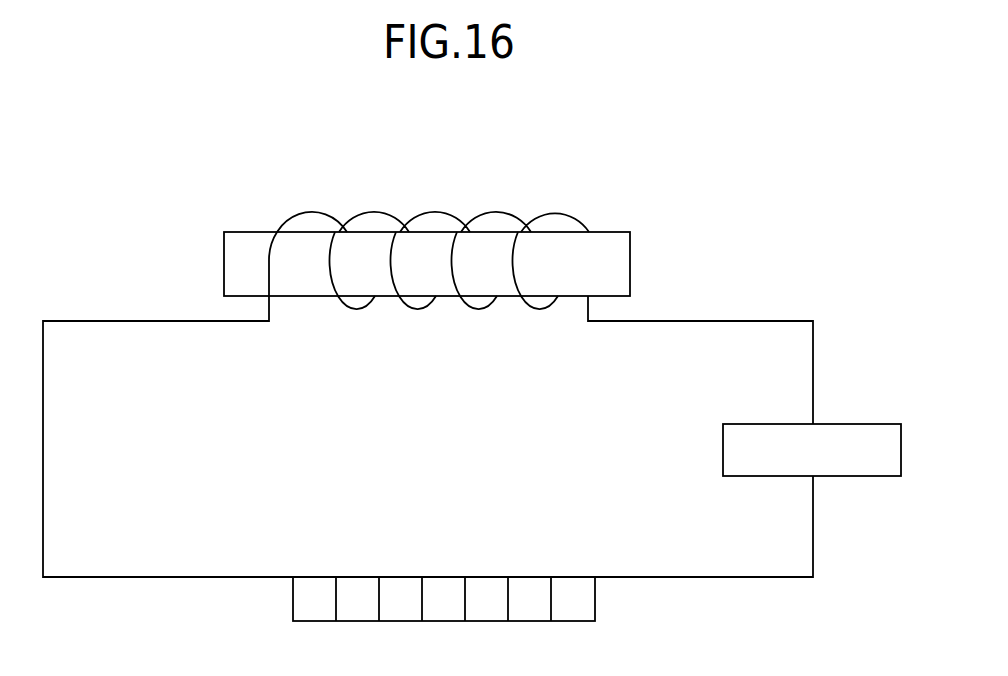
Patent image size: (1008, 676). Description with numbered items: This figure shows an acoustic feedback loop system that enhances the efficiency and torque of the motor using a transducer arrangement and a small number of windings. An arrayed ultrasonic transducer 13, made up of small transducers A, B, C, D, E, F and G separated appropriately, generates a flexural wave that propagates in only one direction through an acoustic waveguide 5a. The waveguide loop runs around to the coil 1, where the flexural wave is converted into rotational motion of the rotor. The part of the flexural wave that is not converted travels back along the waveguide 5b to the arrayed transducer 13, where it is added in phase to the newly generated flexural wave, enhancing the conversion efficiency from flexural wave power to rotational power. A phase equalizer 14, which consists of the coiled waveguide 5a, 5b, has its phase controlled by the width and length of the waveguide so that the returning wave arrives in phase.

The coil antenna 1 is at (630, 237).
The acoustic waveguide 5a is at (146, 321).
The coiled waveguide 5b is at (663, 320).
The arrayed ultrasonic transducer 13 is at (595, 600).
The phase equalizer 14 is at (858, 424).